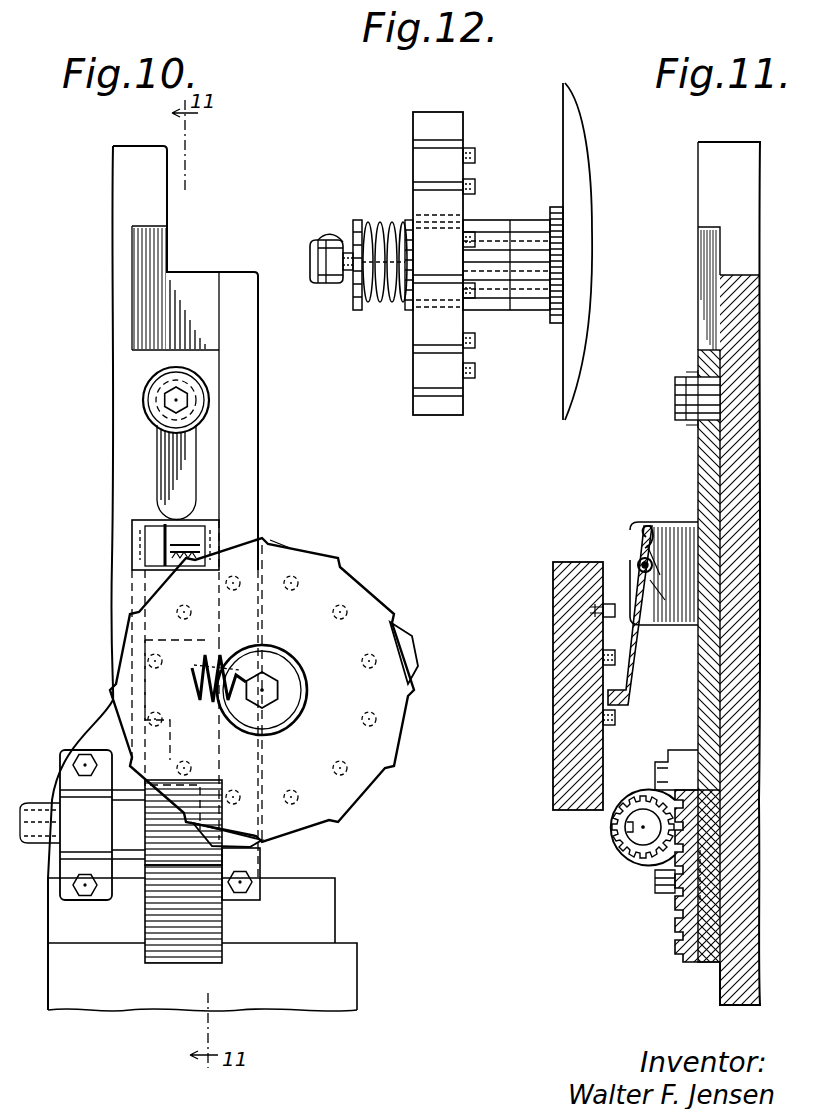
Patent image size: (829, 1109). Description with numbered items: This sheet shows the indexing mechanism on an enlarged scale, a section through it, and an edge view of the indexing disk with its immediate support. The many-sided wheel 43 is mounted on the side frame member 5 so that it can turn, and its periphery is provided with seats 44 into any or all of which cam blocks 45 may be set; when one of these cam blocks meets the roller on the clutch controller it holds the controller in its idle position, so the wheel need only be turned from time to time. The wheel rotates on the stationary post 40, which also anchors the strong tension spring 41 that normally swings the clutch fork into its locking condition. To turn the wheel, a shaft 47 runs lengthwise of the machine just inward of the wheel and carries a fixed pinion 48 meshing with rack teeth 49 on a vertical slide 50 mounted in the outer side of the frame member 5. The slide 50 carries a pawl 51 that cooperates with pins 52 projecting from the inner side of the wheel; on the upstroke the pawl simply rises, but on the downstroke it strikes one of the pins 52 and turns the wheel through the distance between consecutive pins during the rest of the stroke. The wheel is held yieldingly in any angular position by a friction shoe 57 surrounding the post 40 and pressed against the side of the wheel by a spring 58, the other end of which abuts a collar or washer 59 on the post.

In FIG. 10, the side frame member 5 is at (157, 212).
In FIG. 11, the side frame member 5 is at (748, 195).
In FIG. 10, the stationary post 40 is at (268, 690).
In FIG. 12, the stationary post 40 is at (350, 252).
In FIG. 10, the tension spring 41 is at (214, 652).
In FIG. 12, the tension spring 41 is at (326, 240).
In FIG. 10, the many-sided wheel 43 is at (338, 578).
In FIG. 12, the many-sided wheel 43 is at (420, 362).
In FIG. 11, the many-sided wheel 43 is at (562, 698).
In FIG. 10, the seats 44 is at (312, 548).
In FIG. 10, the cam blocks 45 is at (408, 644).
In FIG. 12, the cam blocks 45 is at (450, 223).
In FIG. 10, the shaft 47 is at (40, 800).
In FIG. 11, the shaft 47 is at (628, 866).
In FIG. 10, the pinion 48 is at (188, 856).
In FIG. 11, the pinion 48 is at (607, 856).
In FIG. 10, the rack teeth 49 is at (200, 950).
In FIG. 11, the rack teeth 49 is at (672, 928).
In FIG. 10, the vertical slide 50 is at (213, 440).
In FIG. 11, the vertical slide 50 is at (702, 710).
In FIG. 10, the pawl 51 is at (145, 550).
In FIG. 11, the pawl 51 is at (640, 660).
In FIG. 10, the pins 52 is at (288, 576).
In FIG. 12, the pins 52 is at (475, 152).
In FIG. 11, the pins 52 is at (609, 650).
In FIG. 12, the friction shoe 57 is at (408, 222).
In FIG. 12, the spring 58 is at (378, 302).
In FIG. 10, the collar or washer 59 is at (283, 663).
In FIG. 12, the collar or washer 59 is at (355, 312).